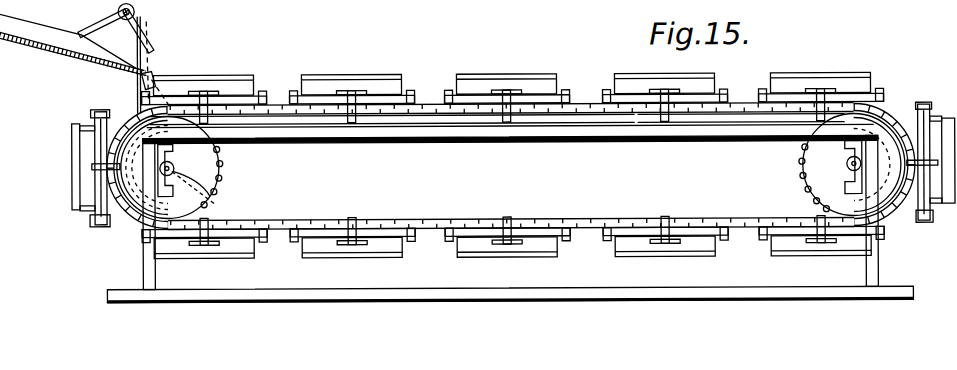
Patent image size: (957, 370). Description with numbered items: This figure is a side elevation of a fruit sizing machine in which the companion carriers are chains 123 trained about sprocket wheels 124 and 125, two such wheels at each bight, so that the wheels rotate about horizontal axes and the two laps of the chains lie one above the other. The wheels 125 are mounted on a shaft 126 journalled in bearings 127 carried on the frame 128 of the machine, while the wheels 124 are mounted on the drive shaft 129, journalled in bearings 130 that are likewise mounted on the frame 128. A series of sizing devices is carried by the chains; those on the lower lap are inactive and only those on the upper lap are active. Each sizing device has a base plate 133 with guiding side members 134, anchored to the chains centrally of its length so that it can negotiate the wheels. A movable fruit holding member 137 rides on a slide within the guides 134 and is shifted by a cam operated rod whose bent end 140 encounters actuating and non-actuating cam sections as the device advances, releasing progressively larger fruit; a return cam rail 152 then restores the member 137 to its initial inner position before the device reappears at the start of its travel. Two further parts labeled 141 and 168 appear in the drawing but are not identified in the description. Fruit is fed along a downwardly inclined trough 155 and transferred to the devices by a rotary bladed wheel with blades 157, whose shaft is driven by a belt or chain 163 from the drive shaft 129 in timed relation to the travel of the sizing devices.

The chains 123 is at (281, 101).
The sprocket wheels 124 is at (208, 173).
The sprocket wheels 125 is at (823, 171).
The shaft 126 is at (848, 171).
The bearings 127 is at (847, 162).
The frame 128 is at (155, 275).
The shaft 129 is at (172, 189).
The bearings 130 is at (200, 200).
The base plate 133 is at (108, 110).
The guiding side members 134 is at (450, 90).
The movable fruit holding member 137 is at (522, 68).
The bent end 140 is at (503, 118).
The guide rail 141 is at (388, 123).
The return cam rail 152 is at (708, 124).
The trough 155 is at (42, 44).
The blades 157 is at (150, 33).
The belt or chain 163 is at (123, 76).
The pivot lever 168 is at (91, 19).